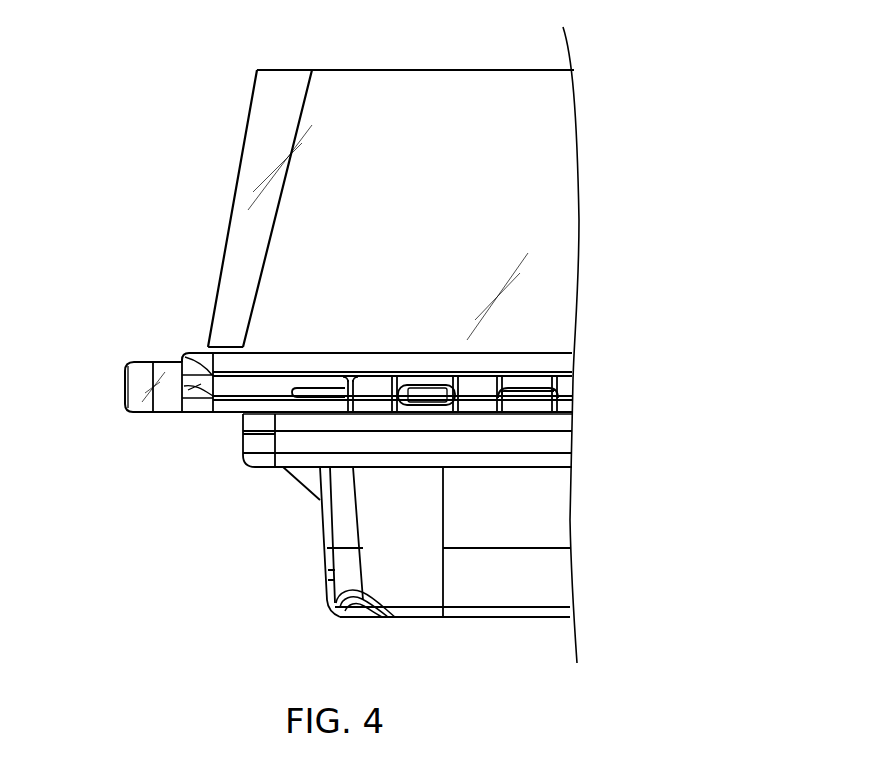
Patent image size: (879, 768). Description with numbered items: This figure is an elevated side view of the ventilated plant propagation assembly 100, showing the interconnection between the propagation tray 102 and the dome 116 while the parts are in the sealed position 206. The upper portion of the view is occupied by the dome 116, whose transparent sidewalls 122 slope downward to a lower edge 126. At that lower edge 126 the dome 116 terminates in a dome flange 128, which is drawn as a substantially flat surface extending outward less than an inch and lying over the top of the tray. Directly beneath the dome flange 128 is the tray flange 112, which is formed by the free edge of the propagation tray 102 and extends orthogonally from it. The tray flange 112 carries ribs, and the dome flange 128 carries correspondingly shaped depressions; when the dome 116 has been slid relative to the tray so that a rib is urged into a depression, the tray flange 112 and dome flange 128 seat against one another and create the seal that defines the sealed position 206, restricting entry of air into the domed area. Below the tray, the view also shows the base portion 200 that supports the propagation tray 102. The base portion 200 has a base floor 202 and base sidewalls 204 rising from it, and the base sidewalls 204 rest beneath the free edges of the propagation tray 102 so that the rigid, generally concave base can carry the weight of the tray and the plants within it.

The ventilated plant propagation assembly 100 is at (380, 398).
The propagation tray 102 is at (218, 418).
The tray flange 112 is at (187, 394).
The dome 116 is at (233, 178).
The sidewalls 122 is at (343, 242).
The lower edge 126 is at (203, 333).
The dome flange 128 is at (124, 391).
The base portion 200 is at (313, 595).
The base floor 202 is at (358, 618).
The base sidewalls 204 is at (430, 577).
The sealed position 206 is at (104, 222).